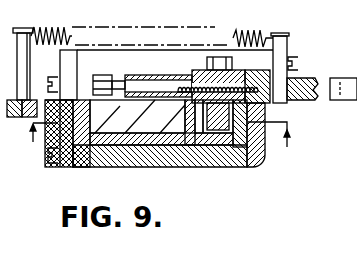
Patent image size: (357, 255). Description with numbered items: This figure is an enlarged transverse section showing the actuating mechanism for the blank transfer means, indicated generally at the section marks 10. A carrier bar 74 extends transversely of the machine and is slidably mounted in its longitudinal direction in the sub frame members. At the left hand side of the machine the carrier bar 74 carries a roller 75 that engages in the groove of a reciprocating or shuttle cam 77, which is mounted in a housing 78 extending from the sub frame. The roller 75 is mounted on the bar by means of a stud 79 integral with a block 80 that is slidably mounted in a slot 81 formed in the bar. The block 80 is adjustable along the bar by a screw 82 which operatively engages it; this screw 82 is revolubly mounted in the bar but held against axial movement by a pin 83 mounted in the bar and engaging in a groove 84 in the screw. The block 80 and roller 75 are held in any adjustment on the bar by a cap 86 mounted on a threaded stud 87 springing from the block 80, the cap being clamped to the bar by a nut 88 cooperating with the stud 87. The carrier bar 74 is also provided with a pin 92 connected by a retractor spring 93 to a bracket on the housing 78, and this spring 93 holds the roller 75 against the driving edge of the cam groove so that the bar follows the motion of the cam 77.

The section line 10 is at (161, 141).
The carrier bar 74 is at (152, 74).
The roller 75 is at (230, 150).
The shuttle cam 77 is at (137, 116).
The housing 78 is at (30, 64).
The stud 79 is at (202, 150).
The block 80 is at (128, 166).
The slot 81 is at (281, 69).
The screw 82 is at (100, 166).
The pin 83 is at (60, 122).
The groove 84 is at (60, 167).
The cap 86 is at (198, 72).
The threaded stud 87 is at (290, 102).
The nut 88 is at (186, 150).
The pin 92 is at (300, 63).
The retractor spring 93 is at (152, 37).